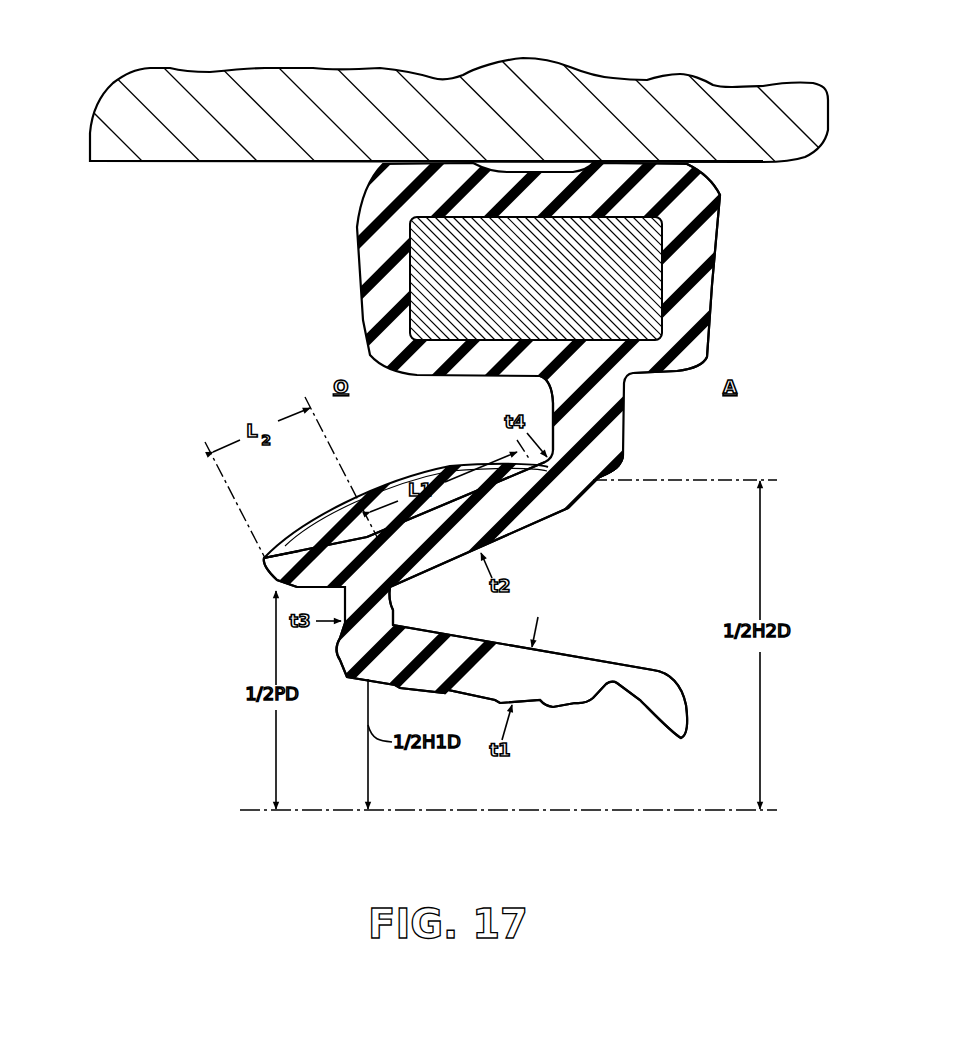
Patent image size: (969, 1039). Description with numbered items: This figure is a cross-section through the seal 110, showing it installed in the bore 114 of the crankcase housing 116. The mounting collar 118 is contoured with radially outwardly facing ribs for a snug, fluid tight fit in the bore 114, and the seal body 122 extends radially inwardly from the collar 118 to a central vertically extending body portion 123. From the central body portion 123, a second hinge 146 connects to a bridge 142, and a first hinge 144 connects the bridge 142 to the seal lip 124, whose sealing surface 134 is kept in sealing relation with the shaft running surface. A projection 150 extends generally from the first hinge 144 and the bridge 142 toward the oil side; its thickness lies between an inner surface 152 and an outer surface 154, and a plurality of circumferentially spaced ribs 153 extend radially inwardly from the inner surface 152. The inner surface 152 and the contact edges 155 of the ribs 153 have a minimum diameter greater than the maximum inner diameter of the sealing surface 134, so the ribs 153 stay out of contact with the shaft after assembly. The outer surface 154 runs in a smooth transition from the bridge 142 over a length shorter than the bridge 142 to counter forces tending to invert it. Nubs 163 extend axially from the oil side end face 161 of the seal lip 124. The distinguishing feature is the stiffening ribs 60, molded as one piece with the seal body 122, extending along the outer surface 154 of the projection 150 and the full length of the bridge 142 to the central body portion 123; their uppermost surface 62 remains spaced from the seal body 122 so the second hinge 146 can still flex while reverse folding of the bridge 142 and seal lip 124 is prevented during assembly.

The seal 110 is at (318, 313).
The bore 114 is at (190, 163).
The crankcase housing 116 is at (629, 97).
The mounting collar 118 is at (640, 240).
The seal body 122 is at (690, 313).
The central body portion 123 is at (553, 415).
The seal lip 124 is at (553, 652).
The sealing surface 134 is at (543, 713).
The bridge 142 is at (495, 465).
The first hinge 144 is at (399, 613).
The second hinge 146 is at (583, 499).
The stiffening ribs 60 is at (380, 473).
The uppermost surface 62 is at (363, 477).
The projection 150 is at (273, 552).
The inner surface 152 is at (290, 579).
The ribs 153 is at (286, 590).
The outer surface 154 is at (317, 543).
The contact edges 155 is at (335, 591).
The oil side end face 161 is at (344, 670).
The nubs 163 is at (333, 646).